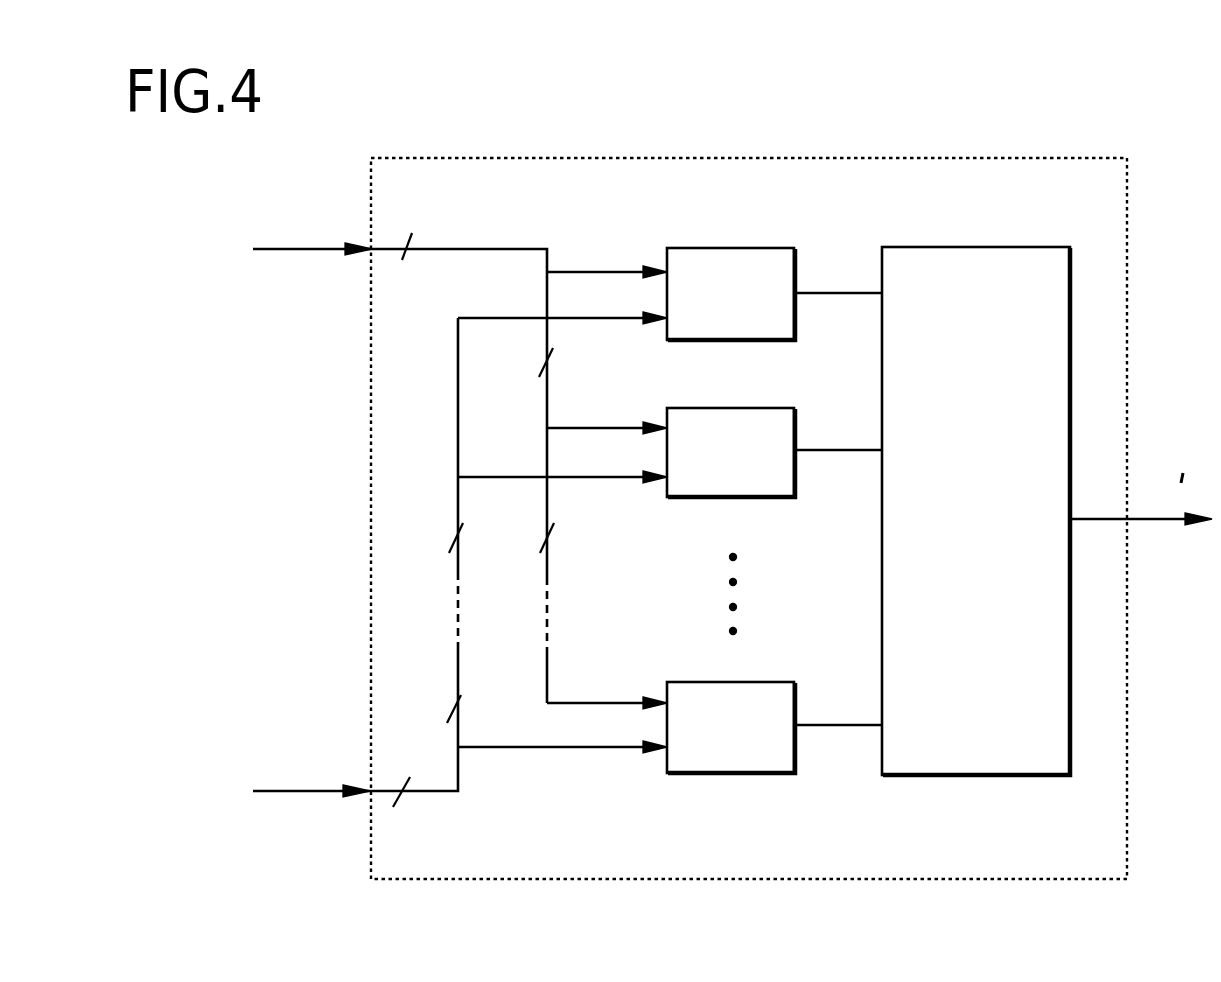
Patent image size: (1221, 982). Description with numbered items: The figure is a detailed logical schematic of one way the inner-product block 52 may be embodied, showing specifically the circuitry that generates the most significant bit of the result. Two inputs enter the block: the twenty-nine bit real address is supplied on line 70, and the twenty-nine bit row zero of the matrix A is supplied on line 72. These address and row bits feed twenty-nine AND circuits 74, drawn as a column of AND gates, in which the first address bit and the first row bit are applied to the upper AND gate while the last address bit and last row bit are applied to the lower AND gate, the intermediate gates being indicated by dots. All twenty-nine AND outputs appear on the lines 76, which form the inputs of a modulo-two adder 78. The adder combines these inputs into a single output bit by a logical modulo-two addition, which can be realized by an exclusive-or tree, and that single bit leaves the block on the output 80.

The inner-product block 52 is at (712, 158).
The line 70 is at (319, 248).
The line 72 is at (319, 790).
The AND circuits 74 is at (797, 260).
The lines 76 is at (825, 294).
The modulo-2 adder 78 is at (975, 247).
The output S0' 80 is at (1145, 521).